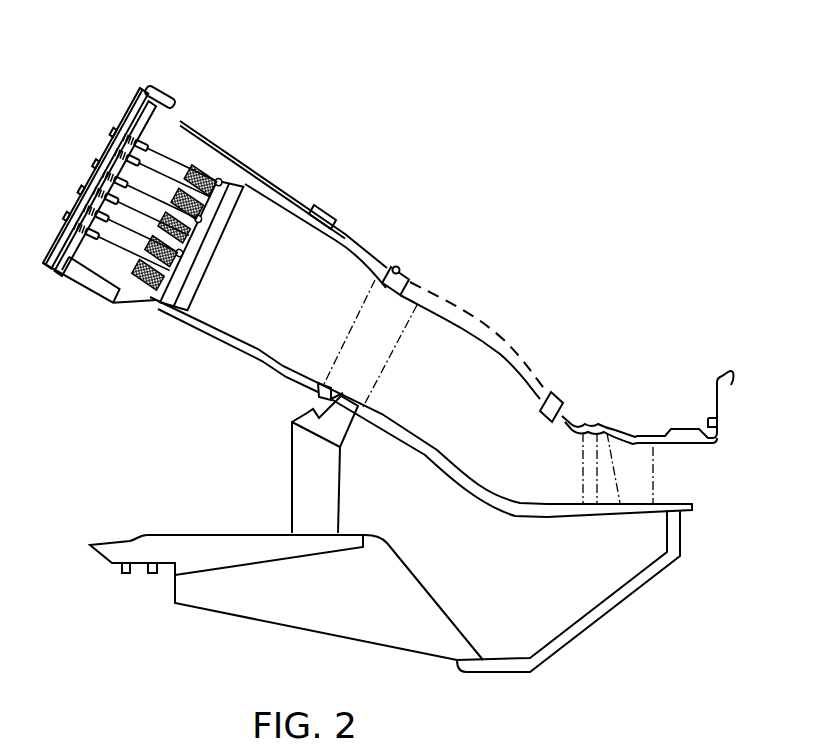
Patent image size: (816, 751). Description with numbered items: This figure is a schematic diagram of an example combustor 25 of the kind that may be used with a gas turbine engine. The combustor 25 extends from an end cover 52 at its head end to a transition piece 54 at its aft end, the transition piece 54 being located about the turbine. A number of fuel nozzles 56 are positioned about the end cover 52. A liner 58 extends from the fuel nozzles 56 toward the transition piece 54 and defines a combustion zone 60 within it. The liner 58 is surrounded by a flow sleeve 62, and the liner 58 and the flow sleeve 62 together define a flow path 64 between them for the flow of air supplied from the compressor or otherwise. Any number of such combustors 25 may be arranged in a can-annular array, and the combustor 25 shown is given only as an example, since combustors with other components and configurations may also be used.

The combustor 25 is at (287, 96).
The end cover 52 is at (68, 224).
The transition piece 54 is at (528, 376).
The fuel nozzles 56 is at (150, 248).
The liner 58 is at (334, 248).
The combustion zone 60 is at (290, 288).
The flow sleeve 62 is at (472, 308).
The flow path 64 is at (419, 290).